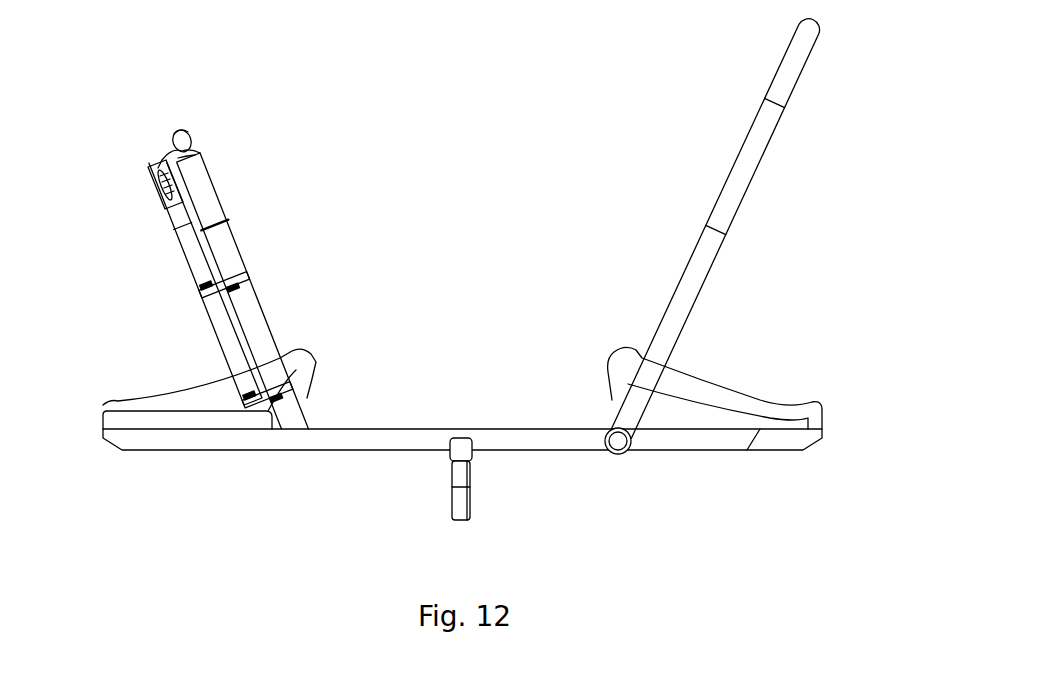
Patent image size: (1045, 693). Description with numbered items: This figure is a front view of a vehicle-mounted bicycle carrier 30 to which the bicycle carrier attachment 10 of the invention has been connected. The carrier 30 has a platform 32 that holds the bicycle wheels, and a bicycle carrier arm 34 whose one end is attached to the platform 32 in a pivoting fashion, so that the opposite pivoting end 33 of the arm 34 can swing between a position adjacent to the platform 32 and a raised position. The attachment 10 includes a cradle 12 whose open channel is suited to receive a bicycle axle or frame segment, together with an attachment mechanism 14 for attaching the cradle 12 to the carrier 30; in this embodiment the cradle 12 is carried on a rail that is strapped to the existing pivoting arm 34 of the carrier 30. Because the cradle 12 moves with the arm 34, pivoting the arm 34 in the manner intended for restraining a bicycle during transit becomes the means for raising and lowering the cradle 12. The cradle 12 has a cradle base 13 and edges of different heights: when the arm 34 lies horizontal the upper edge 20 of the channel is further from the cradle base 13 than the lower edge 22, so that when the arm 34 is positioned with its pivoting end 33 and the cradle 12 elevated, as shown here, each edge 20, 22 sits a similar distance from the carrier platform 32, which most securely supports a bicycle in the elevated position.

The bicycle carrier attachment 10 is at (148, 378).
The cradle 12 is at (155, 163).
The cradle base 13 is at (152, 190).
The mechanism for attaching cradle to carrier 14 is at (250, 272).
The upper longer edge of open channel 20 is at (200, 150).
The lower shorter edge of open channel 22 is at (165, 158).
The pivoting end of bicycle carrier arm 33 is at (178, 129).
The vehicle-mounted bicycle carrier 30 is at (878, 140).
The platform of bicycle carrier to hold bicycle wheels 32 is at (157, 422).
The bicycle carrier arm 34 is at (258, 322).